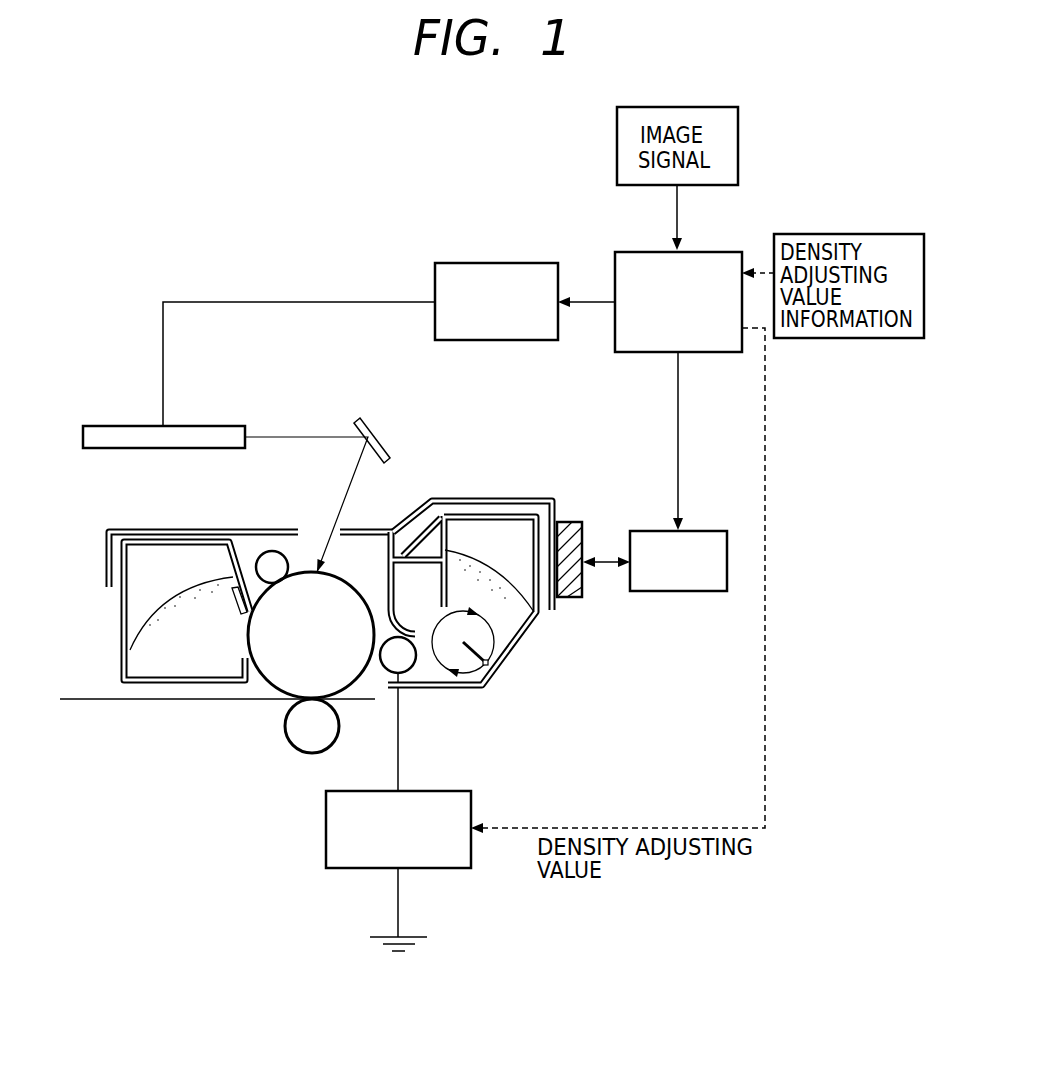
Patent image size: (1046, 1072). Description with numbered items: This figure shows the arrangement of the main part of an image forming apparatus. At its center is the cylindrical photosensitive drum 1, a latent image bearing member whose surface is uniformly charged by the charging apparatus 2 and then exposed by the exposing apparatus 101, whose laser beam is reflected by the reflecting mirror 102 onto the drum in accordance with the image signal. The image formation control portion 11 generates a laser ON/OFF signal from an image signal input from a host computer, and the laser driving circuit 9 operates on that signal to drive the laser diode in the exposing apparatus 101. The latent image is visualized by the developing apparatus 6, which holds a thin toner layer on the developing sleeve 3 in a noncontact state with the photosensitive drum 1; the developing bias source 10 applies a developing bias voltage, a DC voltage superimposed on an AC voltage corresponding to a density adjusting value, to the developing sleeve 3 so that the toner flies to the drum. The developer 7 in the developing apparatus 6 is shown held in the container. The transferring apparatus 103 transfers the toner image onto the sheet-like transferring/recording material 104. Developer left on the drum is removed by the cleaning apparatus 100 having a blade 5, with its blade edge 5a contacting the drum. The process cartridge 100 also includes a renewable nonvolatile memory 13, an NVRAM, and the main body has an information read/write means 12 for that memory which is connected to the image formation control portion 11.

The photosensitive drum 1 is at (347, 587).
The charging apparatus 2 is at (287, 553).
The developing sleeve 3 is at (410, 663).
The blade 5 is at (122, 620).
The cleaning blade 5a is at (240, 612).
The developing apparatus 6 is at (523, 647).
The toner 7 is at (480, 560).
The laser driving circuit 9 is at (538, 263).
The developing bias source 10 is at (447, 790).
The image formation control portion 11 is at (710, 250).
The information read/write means 12 is at (708, 530).
The nonvolatile memory 13 is at (573, 527).
The cleaning apparatus 100 is at (128, 530).
The exposing apparatus 101 is at (112, 426).
The reflecting mirror 102 is at (363, 420).
The transferring apparatus 103 is at (337, 737).
The transferring/recording material 104 is at (93, 700).